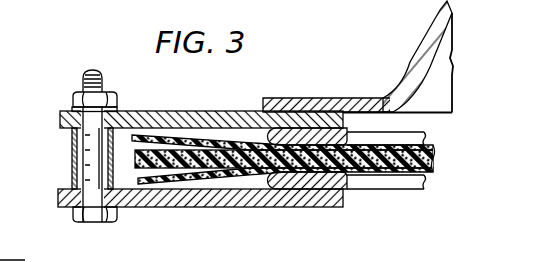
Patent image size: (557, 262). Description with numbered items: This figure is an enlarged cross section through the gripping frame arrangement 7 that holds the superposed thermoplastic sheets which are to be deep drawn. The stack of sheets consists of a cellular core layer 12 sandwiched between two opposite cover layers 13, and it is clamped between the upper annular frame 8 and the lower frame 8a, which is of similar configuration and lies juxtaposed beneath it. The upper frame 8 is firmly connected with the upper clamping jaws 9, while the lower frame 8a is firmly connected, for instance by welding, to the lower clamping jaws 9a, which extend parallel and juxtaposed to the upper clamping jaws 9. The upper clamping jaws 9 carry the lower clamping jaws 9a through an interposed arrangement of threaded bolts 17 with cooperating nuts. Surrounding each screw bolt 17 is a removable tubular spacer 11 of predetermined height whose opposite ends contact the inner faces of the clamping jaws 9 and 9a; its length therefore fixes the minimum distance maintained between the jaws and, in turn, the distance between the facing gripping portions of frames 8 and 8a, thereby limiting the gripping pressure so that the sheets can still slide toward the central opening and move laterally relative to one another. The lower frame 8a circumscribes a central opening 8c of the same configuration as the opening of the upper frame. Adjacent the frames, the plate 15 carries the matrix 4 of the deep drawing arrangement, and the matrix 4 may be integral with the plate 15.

The matrix 4 is at (441, 42).
The gripping frame arrangement 7 is at (243, 131).
The annular frame 8 is at (296, 131).
The lower frame 8a is at (310, 180).
The central opening of lower frame 8c is at (408, 186).
The upper clamping jaws 9 is at (208, 118).
The lower clamping jaws 9a is at (232, 198).
The tubular spacer 11 is at (70, 173).
The cellular core layer 12 is at (212, 171).
The cover layers 13 is at (142, 131).
The plate 15 is at (347, 101).
The threaded bolt 17 is at (90, 148).